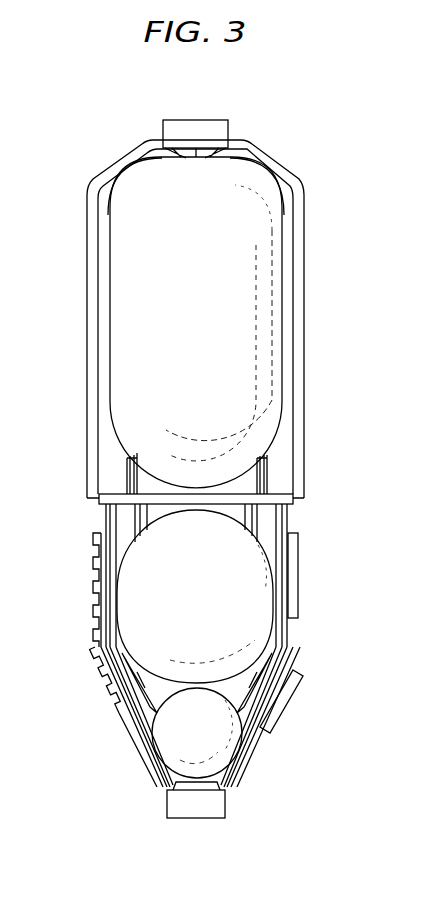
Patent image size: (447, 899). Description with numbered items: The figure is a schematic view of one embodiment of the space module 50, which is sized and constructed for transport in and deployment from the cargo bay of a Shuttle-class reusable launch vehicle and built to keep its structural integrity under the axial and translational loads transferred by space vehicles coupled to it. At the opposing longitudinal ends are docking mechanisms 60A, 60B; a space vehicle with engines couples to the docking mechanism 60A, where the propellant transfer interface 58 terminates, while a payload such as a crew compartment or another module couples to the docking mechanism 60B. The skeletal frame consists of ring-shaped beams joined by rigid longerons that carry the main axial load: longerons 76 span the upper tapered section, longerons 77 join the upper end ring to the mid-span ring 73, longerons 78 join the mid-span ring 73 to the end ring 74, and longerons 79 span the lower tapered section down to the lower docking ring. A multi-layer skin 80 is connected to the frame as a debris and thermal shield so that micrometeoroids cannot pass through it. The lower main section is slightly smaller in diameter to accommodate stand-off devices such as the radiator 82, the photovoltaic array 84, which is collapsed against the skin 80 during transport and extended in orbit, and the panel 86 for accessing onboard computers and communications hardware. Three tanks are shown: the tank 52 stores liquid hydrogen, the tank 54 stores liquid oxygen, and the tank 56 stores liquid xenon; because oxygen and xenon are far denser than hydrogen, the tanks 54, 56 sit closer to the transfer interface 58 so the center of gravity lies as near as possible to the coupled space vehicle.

The space module 50 is at (294, 146).
The tank 52 is at (141, 253).
The tank 54 is at (270, 623).
The tank 56 is at (215, 740).
The propellant transfer interface 58 is at (168, 790).
The docking mechanism 60A is at (195, 818).
The docking mechanism 60B is at (196, 120).
The mid-span ring 73 is at (277, 498).
The end ring 74 is at (287, 658).
The longerons 76 is at (162, 160).
The longerons 77 is at (125, 463).
The longerons 78 is at (113, 545).
The longerons 79 is at (153, 690).
The skin 80 is at (305, 200).
The radiator 82 is at (92, 602).
The photovoltaic array 84 is at (298, 593).
The panel 86 is at (285, 693).